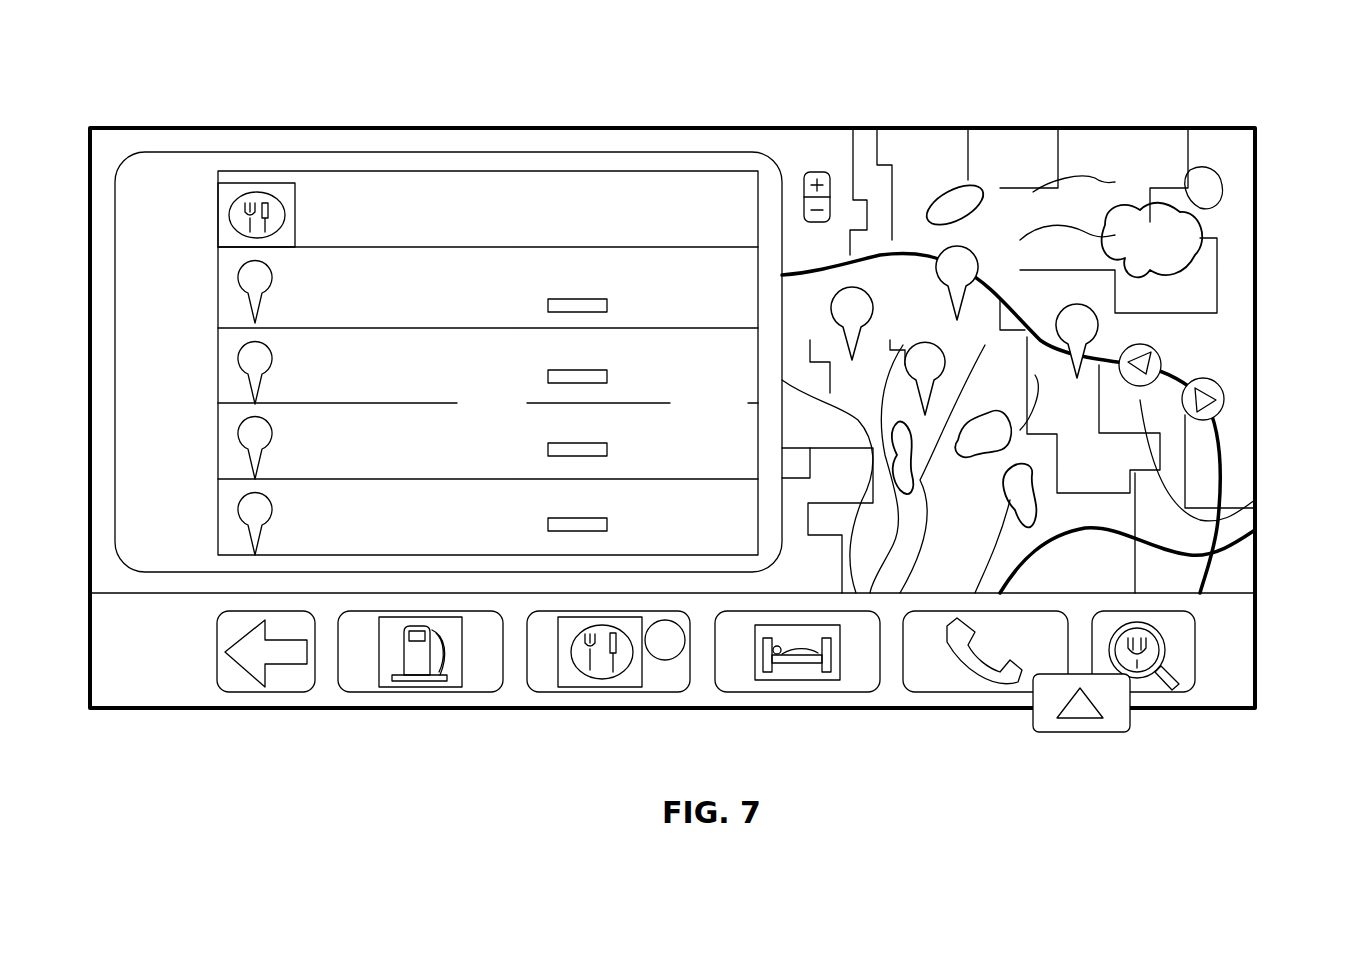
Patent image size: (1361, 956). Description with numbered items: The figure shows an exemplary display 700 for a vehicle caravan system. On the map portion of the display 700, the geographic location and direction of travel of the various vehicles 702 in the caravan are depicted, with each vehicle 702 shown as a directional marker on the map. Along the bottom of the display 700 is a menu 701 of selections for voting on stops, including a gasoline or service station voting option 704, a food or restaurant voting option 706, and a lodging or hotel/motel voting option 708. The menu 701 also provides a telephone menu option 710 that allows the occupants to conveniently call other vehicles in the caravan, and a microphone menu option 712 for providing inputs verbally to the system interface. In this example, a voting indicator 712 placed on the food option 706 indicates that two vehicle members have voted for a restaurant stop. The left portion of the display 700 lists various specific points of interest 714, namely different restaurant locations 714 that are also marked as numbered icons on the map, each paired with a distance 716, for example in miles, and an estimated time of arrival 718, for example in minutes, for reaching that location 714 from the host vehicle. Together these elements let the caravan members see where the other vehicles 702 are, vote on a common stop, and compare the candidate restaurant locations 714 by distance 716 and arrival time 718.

The display 700 is at (1280, 70).
The menu 701 is at (284, 729).
The vehicles 702 is at (1152, 352).
The gasoline voting option 704 is at (363, 675).
The food voting option 706 is at (850, 287).
The lodging voting option 708 is at (780, 675).
The telephone menu option 710 is at (945, 677).
The voting indicator 712 is at (663, 660).
The points of interest 714 is at (200, 248).
The distances 716 is at (538, 273).
The estimated times of arrival 718 is at (660, 273).